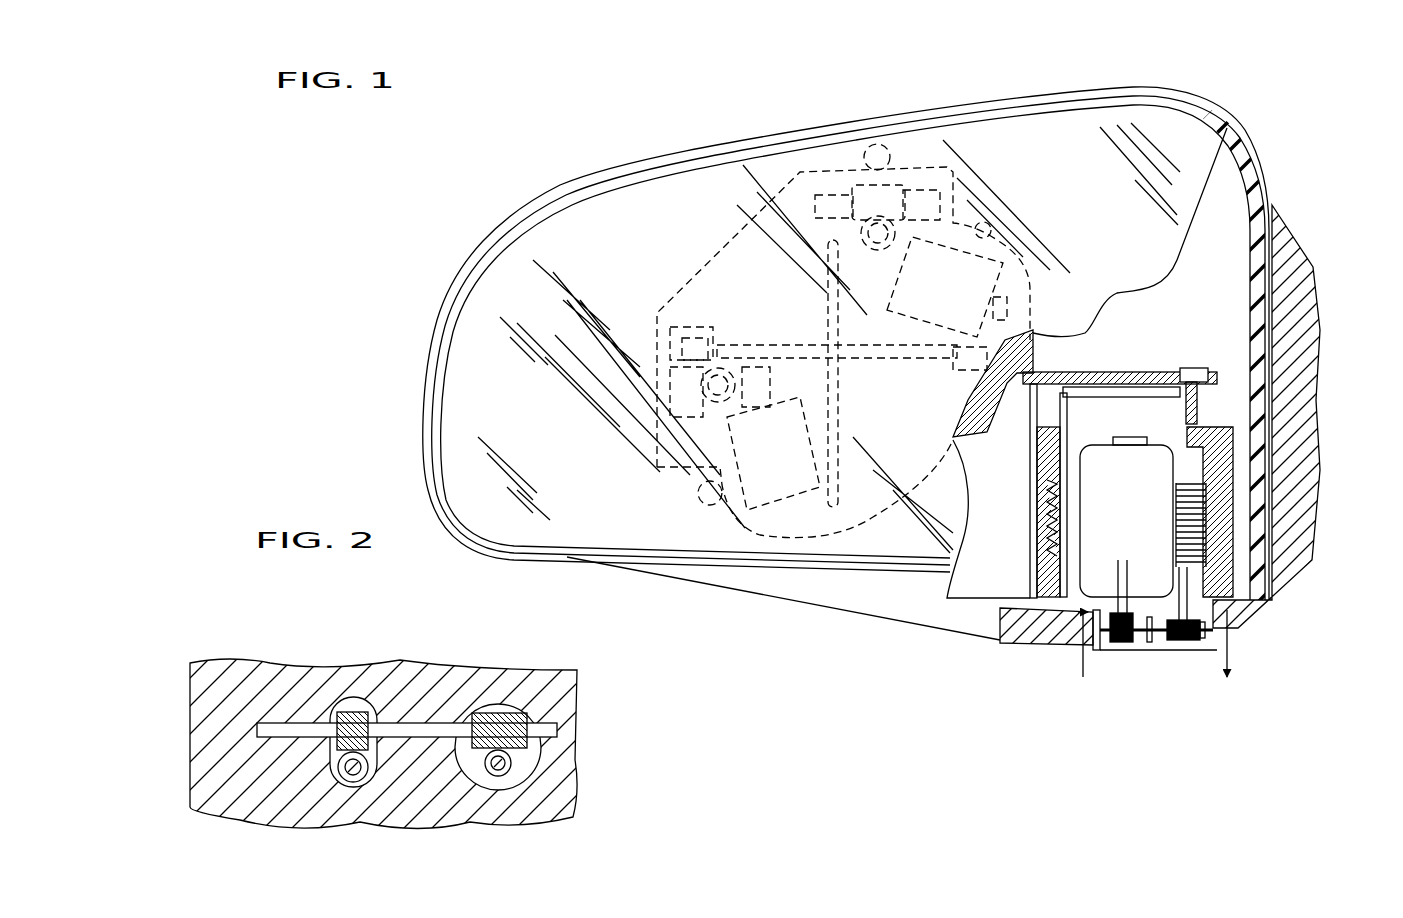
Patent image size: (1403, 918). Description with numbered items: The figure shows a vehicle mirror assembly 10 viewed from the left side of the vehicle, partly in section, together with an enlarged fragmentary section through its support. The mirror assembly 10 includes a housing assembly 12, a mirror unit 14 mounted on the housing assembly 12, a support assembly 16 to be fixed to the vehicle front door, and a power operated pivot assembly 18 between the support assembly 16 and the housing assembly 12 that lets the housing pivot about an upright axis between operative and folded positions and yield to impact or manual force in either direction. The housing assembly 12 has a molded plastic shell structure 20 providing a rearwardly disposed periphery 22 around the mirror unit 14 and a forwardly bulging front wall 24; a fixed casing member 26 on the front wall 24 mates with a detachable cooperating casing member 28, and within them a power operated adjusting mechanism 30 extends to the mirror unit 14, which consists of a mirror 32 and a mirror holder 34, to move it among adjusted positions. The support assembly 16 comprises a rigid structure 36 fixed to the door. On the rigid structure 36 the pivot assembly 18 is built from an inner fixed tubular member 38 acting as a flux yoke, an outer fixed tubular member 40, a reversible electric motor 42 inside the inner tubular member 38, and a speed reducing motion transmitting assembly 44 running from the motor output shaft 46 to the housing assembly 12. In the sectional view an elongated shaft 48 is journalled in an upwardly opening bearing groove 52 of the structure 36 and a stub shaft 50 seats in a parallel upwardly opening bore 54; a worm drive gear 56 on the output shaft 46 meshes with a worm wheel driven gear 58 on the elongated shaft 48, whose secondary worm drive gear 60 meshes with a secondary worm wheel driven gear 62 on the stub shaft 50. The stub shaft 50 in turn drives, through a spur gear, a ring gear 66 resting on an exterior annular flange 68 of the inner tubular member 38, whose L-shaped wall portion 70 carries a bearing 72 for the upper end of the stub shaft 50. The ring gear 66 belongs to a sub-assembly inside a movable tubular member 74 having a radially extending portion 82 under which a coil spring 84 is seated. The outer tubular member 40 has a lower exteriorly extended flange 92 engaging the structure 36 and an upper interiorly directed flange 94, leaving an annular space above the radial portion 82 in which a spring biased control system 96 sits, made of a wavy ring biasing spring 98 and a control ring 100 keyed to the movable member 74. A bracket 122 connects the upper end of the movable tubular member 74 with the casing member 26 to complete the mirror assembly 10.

In FIG. 1, the vehicle mirror assembly 10 is at (600, 152).
In FIG. 1, the housing assembly 12 is at (1207, 95).
In FIG. 1, the mirror unit 14 is at (830, 128).
In FIG. 1, the support assembly 16 is at (1258, 652).
In FIG. 2, the support assembly 16 is at (188, 708).
In FIG. 1, the power operated pivot assembly 18 is at (1313, 340).
In FIG. 1, the molded plastic shell structure 20 is at (847, 598).
In FIG. 1, the rearwardly disposed periphery 22 is at (460, 268).
In FIG. 1, the front wall 24 is at (1233, 180).
In FIG. 1, the fixed casing member 26 is at (1033, 355).
In FIG. 1, the cooperating casing member 28 is at (763, 260).
In FIG. 1, the power operated adjusting mechanism 30 is at (910, 193).
In FIG. 1, the mirror 32 is at (677, 538).
In FIG. 1, the mirror holder 34 is at (503, 541).
In FIG. 1, the rigid structure 36 is at (1258, 645).
In FIG. 2, the rigid structure 36 is at (200, 773).
In FIG. 1, the inner fixed tubular member 38 is at (1040, 520).
In FIG. 1, the outer fixed tubular member 40 is at (1035, 463).
In FIG. 1, the reversible electric motor 42 is at (1140, 517).
In FIG. 1, the speed reducing motion transmitting assembly 44 is at (1137, 652).
In FIG. 2, the speed reducing motion transmitting assembly 44 is at (275, 717).
In FIG. 1, the output shaft 46 is at (1112, 603).
In FIG. 2, the output shaft 46 is at (353, 782).
In FIG. 1, the elongated shaft 48 is at (1155, 630).
In FIG. 2, the elongated shaft 48 is at (430, 728).
In FIG. 1, the stub shaft 50 is at (1173, 635).
In FIG. 2, the stub shaft 50 is at (520, 763).
In FIG. 2, the bearing groove 52 is at (310, 724).
In FIG. 1, the bore 54 is at (1177, 655).
In FIG. 2, the bore 54 is at (477, 787).
In FIG. 2, the drive gear 56 is at (297, 813).
In FIG. 2, the driven gear 58 is at (378, 700).
In FIG. 2, the secondary drive gear 60 is at (497, 717).
In FIG. 2, the secondary driven gear 62 is at (511, 770).
In FIG. 1, the ring gear 66 is at (1255, 628).
In FIG. 1, the exterior annular flange 68 is at (1030, 642).
In FIG. 1, the L-shaped wall portion 70 is at (1220, 560).
In FIG. 1, the bearing 72 is at (1247, 613).
In FIG. 1, the movable tubular member 74 is at (1218, 515).
In FIG. 1, the radially extending portion 82 is at (1220, 470).
In FIG. 1, the coil spring 84 is at (1040, 496).
In FIG. 1, the exteriorly extended flange 92 is at (1003, 592).
In FIG. 1, the interiorly directed flange 94 is at (1225, 408).
In FIG. 1, the spring biased control system 96 is at (1033, 442).
In FIG. 1, the biasing spring 98 is at (1177, 465).
In FIG. 1, the control ring 100 is at (1065, 440).
In FIG. 1, the bracket 122 is at (1140, 358).